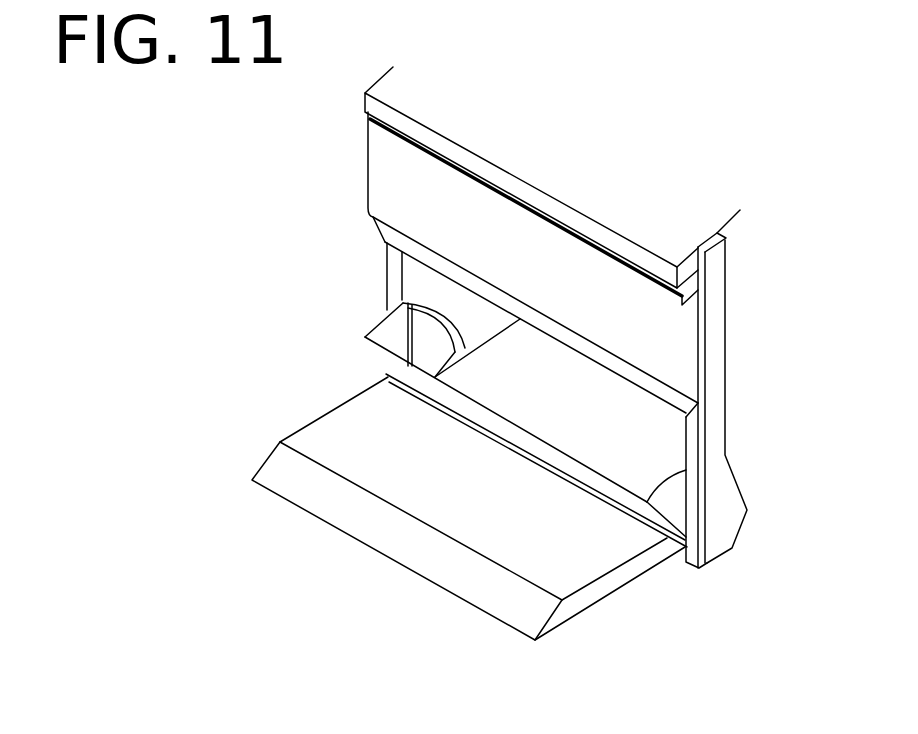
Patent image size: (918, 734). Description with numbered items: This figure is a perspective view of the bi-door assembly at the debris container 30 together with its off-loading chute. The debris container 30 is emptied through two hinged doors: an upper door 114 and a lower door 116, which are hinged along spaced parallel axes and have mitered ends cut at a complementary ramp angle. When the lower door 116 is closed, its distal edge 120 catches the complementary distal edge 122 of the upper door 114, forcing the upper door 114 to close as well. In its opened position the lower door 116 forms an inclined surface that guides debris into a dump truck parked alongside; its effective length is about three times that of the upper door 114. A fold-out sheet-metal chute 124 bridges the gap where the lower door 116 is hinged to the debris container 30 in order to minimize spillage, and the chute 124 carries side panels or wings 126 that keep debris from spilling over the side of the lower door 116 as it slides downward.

The debris container 30 is at (612, 222).
The upper door 114 is at (475, 222).
The lower door 116 is at (486, 496).
The distal edge of the lower door 120 is at (377, 552).
The distal edge of the upper door 122 is at (583, 362).
The fold-out chute 124 is at (415, 374).
The side panels or wings 126 is at (672, 494).